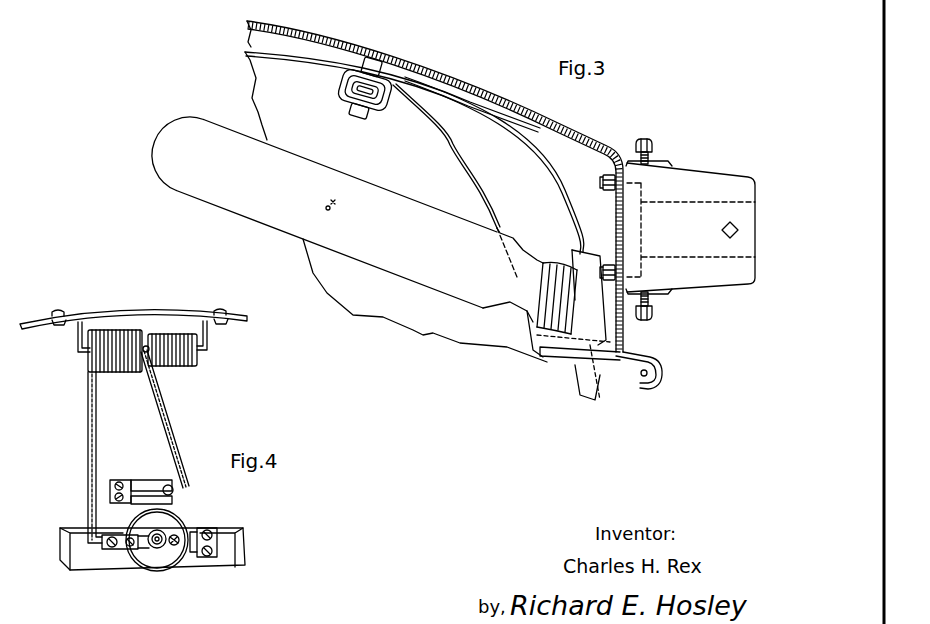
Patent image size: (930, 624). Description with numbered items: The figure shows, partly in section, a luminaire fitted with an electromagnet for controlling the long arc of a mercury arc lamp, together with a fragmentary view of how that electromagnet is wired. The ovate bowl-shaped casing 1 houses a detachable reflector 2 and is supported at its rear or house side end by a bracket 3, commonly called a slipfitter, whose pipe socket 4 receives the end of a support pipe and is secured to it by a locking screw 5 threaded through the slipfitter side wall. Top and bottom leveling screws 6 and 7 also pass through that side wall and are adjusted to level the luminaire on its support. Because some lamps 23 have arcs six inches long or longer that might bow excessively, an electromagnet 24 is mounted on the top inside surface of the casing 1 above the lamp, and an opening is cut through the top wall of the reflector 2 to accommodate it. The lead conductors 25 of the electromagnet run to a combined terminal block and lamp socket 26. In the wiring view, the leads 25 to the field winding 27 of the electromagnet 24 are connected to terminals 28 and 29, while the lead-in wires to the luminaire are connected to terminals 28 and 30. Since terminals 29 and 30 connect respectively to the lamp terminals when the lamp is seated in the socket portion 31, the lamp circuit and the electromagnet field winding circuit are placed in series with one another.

In FIG. 3, the casing 1 is at (427, 75).
In FIG. 3, the reflector 2 is at (448, 145).
In FIG. 3, the bracket 3 is at (705, 174).
In FIG. 3, the pipe socket 4 is at (688, 247).
In FIG. 3, the locking screw 5 is at (722, 228).
In FIG. 3, the top leveling screw 6 is at (657, 133).
In FIG. 3, the bottom leveling screw 7 is at (652, 320).
In FIG. 3, the lamp 23 is at (197, 115).
In FIG. 3, the electromagnet 24 is at (350, 107).
In FIG. 4, the electromagnet 24 is at (85, 355).
In FIG. 3, the lead conductors 25 is at (555, 190).
In FIG. 4, the lead conductors 25 is at (157, 412).
In FIG. 3, the combined terminal block and lamp socket 26 is at (588, 263).
In FIG. 4, the field winding 27 is at (170, 358).
In FIG. 4, the terminal 28 is at (141, 479).
In FIG. 4, the terminal 29 is at (108, 547).
In FIG. 4, the terminal 30 is at (207, 528).
In FIG. 4, the socket portion 31 is at (157, 572).